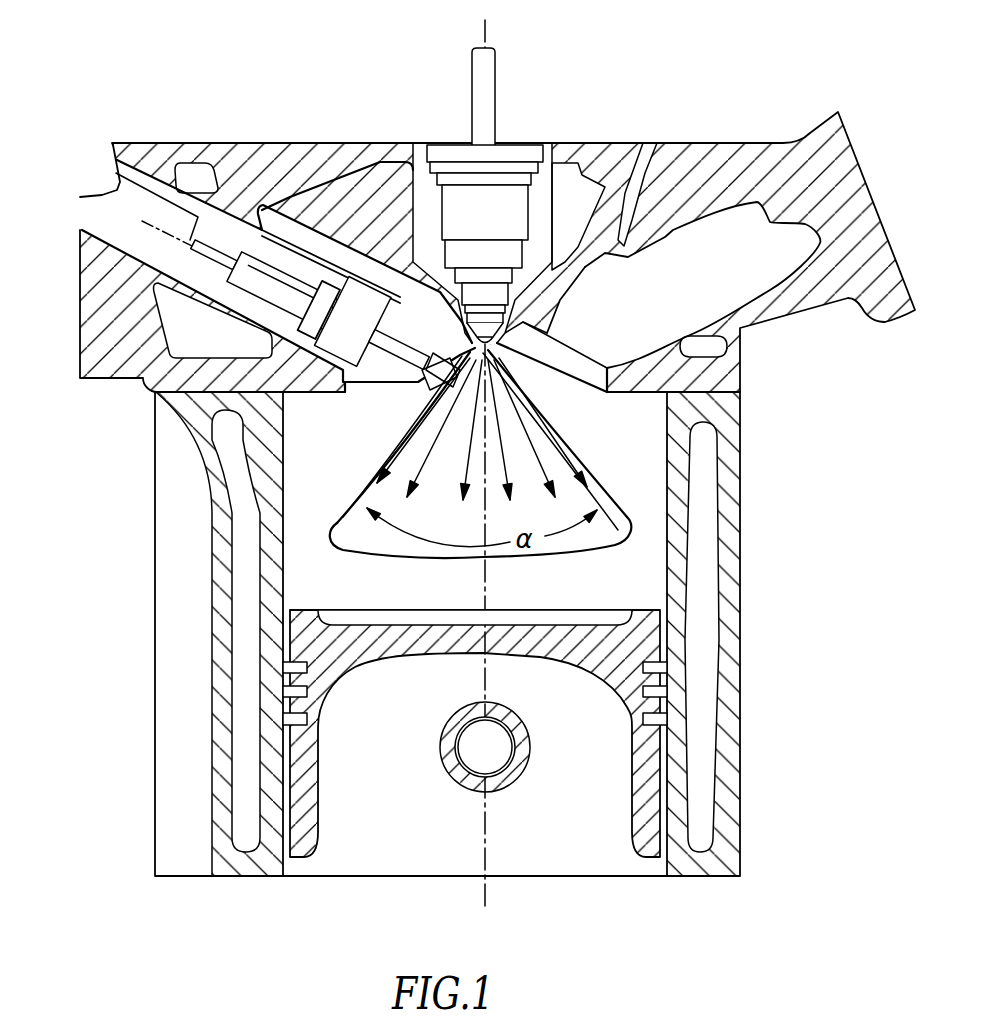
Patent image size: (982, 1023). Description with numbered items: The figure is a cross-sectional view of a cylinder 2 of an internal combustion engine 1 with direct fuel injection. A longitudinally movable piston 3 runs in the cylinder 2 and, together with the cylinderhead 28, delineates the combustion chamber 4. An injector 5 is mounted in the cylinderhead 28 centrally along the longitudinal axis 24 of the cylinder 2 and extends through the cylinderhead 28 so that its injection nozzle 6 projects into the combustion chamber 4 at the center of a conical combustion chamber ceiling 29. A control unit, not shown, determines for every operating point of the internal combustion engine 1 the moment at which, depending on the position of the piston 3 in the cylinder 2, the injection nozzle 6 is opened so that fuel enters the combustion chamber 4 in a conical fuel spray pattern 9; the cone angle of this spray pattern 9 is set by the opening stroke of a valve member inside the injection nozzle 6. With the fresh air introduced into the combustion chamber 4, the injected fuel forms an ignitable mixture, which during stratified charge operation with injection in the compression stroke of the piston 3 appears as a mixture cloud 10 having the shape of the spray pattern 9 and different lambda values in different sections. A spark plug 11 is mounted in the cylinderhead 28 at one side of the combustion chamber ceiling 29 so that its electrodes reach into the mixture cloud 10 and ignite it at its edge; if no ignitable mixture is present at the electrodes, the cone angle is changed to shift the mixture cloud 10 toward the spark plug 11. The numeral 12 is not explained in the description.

The internal combustion engine 1 is at (253, 100).
The cylinder 2 is at (673, 487).
The piston 3 is at (622, 641).
The combustion chamber 4 is at (647, 570).
The injector 5 is at (499, 200).
The injection nozzle 6 is at (418, 404).
The conical fuel spray pattern 9 is at (535, 420).
The mixture cloud 10 is at (374, 538).
The spark plug 11 is at (350, 340).
The intake port 12 is at (578, 350).
The longitudinal axis 24 is at (485, 888).
The cylinderhead 28 is at (98, 315).
The conical combustion chamber ceiling 29 is at (460, 337).